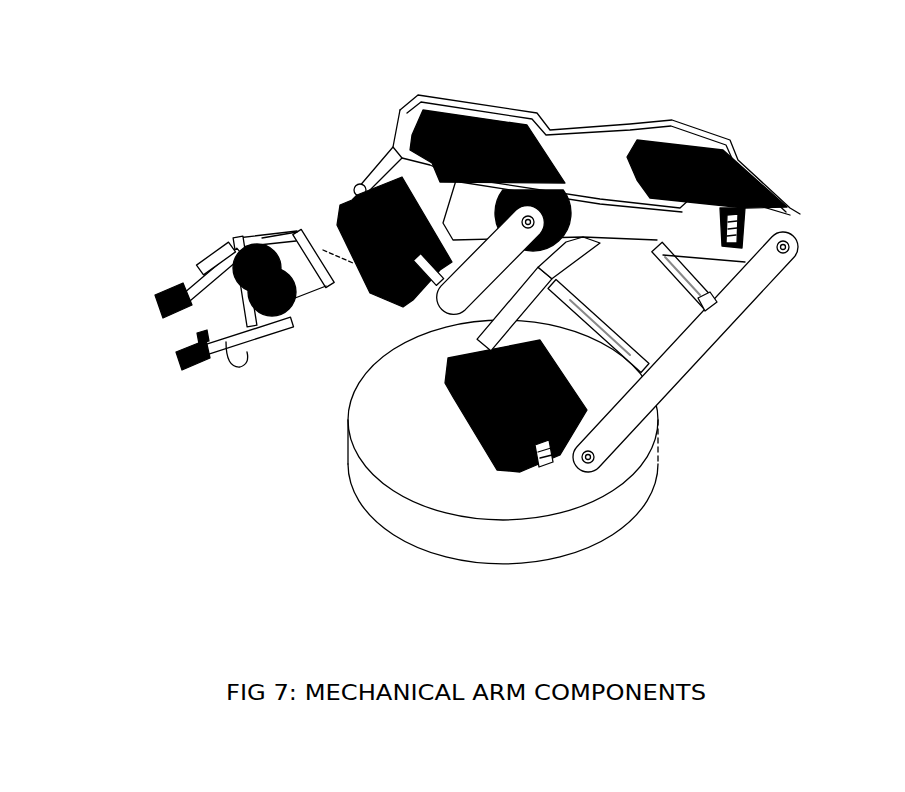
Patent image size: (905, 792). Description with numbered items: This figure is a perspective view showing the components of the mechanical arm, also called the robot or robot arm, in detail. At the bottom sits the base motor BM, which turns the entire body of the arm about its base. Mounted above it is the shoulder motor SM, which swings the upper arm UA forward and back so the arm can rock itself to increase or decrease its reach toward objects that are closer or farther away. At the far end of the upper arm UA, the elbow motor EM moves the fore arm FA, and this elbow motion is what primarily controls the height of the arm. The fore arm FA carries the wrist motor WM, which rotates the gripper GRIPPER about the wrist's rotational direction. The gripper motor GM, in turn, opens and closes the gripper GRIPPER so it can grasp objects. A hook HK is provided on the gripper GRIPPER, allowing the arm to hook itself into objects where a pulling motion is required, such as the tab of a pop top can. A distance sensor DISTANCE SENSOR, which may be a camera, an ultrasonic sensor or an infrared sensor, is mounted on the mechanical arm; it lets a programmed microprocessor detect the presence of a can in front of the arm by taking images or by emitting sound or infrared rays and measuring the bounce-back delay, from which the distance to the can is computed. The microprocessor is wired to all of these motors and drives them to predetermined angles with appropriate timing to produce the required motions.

The elbow motor EM is at (666, 130).
The fore arm FA is at (596, 142).
The wrist motor WM is at (398, 178).
The gripper motor GM is at (253, 202).
The distance sensor DISTANCE SENSOR is at (138, 217).
The gripper GRIPPER is at (168, 298).
The hook HK is at (219, 387).
The upper arm UA is at (637, 352).
The base motor BM is at (547, 442).
The shoulder motor SM is at (581, 462).